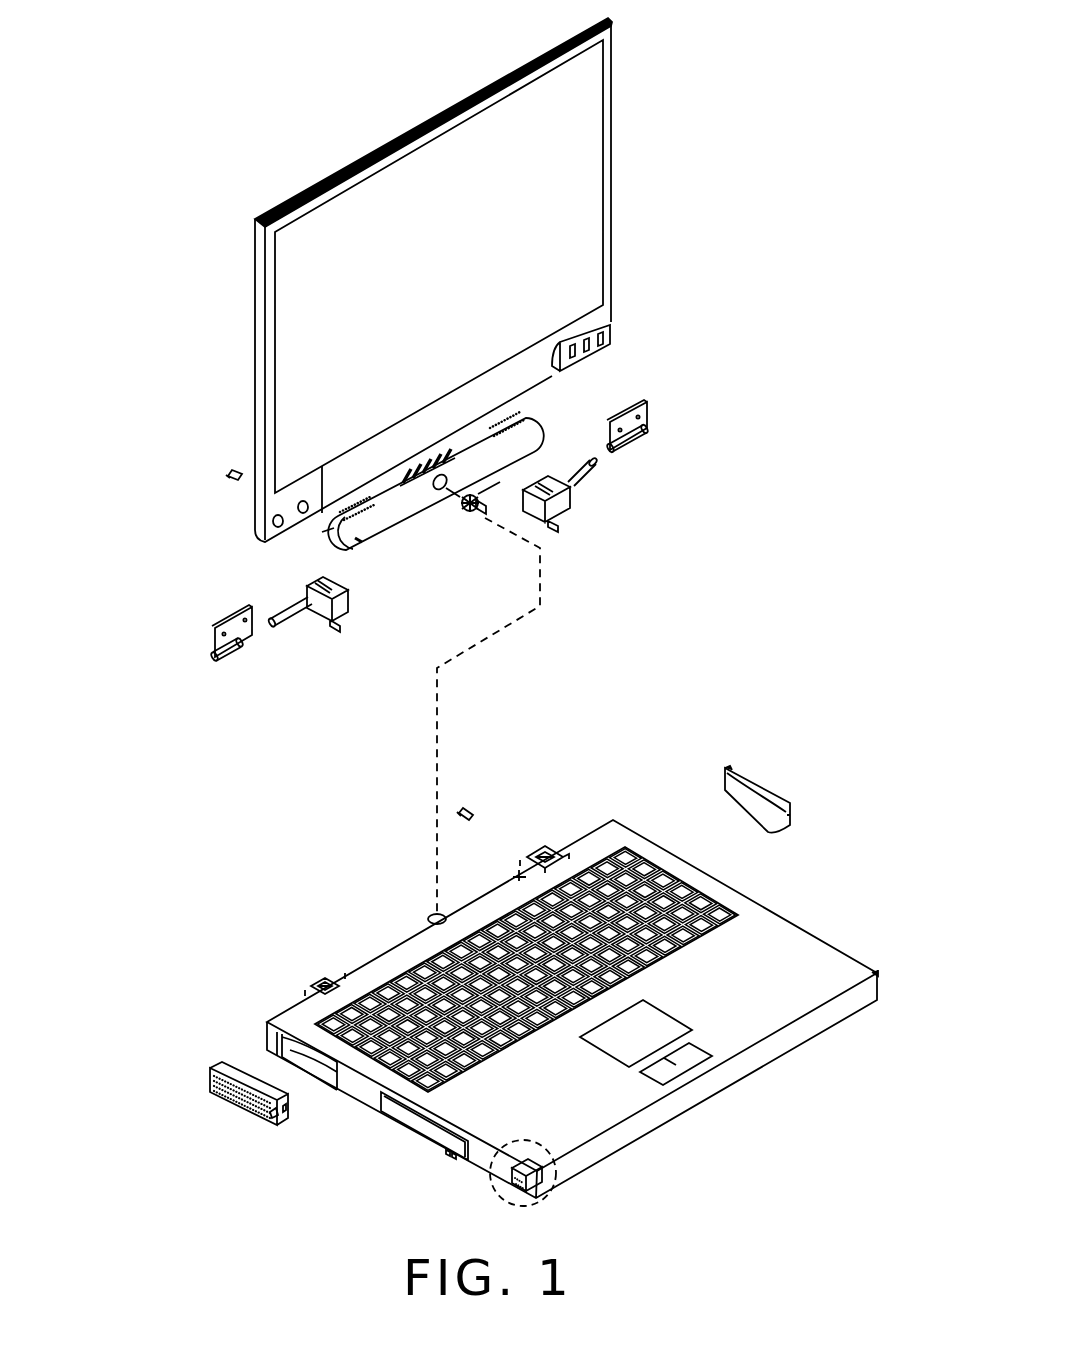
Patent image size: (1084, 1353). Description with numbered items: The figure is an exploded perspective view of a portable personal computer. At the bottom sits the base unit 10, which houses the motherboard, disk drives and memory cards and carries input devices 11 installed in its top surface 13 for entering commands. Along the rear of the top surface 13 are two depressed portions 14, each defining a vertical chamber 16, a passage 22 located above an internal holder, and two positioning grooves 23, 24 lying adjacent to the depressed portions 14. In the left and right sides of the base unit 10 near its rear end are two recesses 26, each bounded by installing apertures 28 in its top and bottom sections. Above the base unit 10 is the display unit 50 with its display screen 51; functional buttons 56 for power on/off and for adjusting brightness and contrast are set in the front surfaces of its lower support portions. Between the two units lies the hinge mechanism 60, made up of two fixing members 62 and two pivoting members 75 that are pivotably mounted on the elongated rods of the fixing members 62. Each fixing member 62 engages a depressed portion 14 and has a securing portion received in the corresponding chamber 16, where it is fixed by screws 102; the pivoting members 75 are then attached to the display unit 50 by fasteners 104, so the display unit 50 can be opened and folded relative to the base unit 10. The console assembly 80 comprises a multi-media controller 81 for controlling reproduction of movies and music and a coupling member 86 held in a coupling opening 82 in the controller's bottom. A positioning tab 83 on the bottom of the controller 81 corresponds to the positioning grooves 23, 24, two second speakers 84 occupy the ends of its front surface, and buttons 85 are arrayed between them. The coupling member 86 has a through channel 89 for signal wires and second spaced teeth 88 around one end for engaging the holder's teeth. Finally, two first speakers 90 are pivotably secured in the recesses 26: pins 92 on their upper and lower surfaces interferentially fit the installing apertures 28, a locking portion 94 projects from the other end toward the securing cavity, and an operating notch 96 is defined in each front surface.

The base unit 10 is at (537, 994).
The input devices 11 is at (700, 1052).
The top surface 13 is at (400, 955).
The depressed portions 14 is at (552, 850).
The vertical chamber 16 is at (546, 852).
The passage 22 is at (436, 912).
The positioning groove 23 is at (519, 876).
The positioning groove 24 is at (352, 956).
The recesses 26 is at (318, 1068).
The installing apertures 28 is at (278, 1035).
The display unit 50 is at (452, 279).
The display screen 51 is at (545, 186).
The functional buttons 56 is at (603, 335).
The hinge mechanism 60 is at (446, 567).
The fixing members 62 is at (442, 563).
The pivoting members 75 is at (225, 658).
The console assembly 80 is at (507, 455).
The multi-media controller 81 is at (538, 428).
The coupling opening 82 is at (435, 492).
The positioning tab 83 is at (360, 540).
The second speakers 84 is at (328, 537).
The buttons 85 is at (455, 452).
The coupling member 86 is at (488, 492).
The second spaced teeth 88 is at (466, 504).
The through channel 89 is at (482, 512).
The first speakers 90 is at (488, 965).
The pins 92 is at (216, 1068).
The locking portion 94 is at (283, 1112).
The operating notch 96 is at (274, 1118).
The screws 102 is at (461, 809).
The fasteners 104 is at (214, 472).